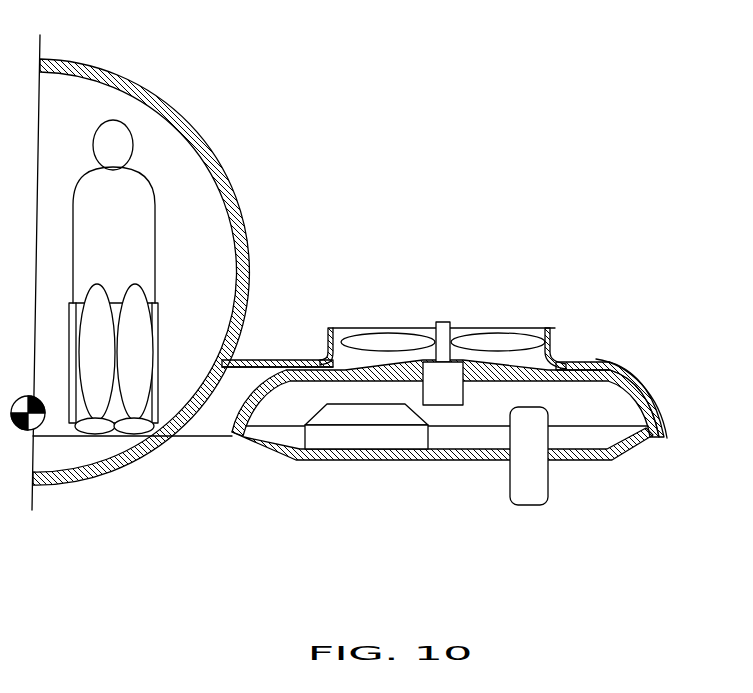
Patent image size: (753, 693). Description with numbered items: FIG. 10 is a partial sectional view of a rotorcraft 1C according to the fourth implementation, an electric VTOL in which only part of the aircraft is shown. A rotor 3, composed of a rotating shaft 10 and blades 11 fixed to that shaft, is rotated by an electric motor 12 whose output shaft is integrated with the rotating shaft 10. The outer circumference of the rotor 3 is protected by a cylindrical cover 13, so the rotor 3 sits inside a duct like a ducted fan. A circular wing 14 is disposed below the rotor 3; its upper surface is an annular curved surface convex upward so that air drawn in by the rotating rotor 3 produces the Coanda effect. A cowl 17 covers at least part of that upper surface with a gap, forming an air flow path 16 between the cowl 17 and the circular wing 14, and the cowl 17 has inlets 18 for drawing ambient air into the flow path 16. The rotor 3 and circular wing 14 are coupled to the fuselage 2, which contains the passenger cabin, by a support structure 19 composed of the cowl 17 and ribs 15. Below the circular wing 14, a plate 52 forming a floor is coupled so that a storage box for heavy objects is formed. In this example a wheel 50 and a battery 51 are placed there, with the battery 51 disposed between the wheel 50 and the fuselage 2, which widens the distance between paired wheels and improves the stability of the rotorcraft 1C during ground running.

The rotorcraft 1C is at (417, 109).
The fuselage 2 is at (219, 170).
The rotor 3 is at (454, 364).
The rotating shaft 10 is at (442, 322).
The blades 11 is at (498, 338).
The electric motor 12 is at (443, 405).
The cylindrical cover 13 is at (557, 340).
The circular wing 14 is at (629, 366).
The ribs 15 is at (255, 376).
The air flow path 16 is at (595, 362).
The cowl 17 is at (253, 296).
The inlets 18 is at (652, 381).
The support structure 19 is at (277, 315).
The wheel 50 is at (548, 477).
The battery 51 is at (367, 438).
The plate 52 is at (468, 460).